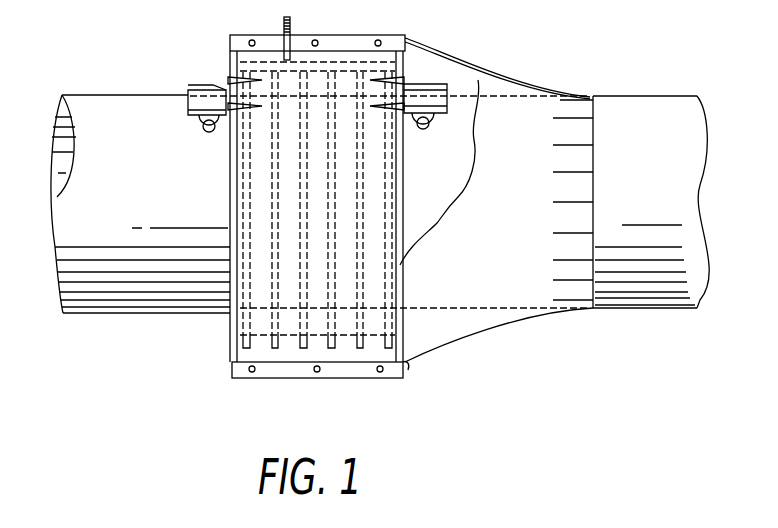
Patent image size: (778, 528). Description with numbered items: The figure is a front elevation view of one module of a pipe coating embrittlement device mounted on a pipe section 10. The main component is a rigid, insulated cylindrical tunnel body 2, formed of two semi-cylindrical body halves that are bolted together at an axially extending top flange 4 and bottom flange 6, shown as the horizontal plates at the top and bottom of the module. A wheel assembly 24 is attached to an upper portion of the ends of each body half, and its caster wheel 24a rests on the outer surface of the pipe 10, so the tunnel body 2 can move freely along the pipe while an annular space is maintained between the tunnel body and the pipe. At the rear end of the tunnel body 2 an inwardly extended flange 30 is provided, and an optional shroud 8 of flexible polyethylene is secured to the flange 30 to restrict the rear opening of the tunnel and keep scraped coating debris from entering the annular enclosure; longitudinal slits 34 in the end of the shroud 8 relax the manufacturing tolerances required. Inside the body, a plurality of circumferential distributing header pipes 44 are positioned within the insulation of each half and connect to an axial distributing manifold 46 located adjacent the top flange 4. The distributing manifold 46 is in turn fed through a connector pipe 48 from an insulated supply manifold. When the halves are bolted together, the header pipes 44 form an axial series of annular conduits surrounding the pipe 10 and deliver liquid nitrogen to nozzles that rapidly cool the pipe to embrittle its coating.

The tunnel body 2 is at (221, 357).
The top flange 4 is at (335, 42).
The bottom flange 6 is at (345, 370).
The shroud 8 is at (514, 118).
The pipe section 10 is at (148, 298).
The wheel assembly 24 is at (204, 89).
The caster wheel 24a is at (214, 133).
The flange 30 is at (405, 362).
The longitudinal slits 34 is at (577, 117).
The circumferential distributing header pipes 44 is at (303, 322).
The distributing manifold 46 is at (372, 65).
The connector pipe 48 is at (280, 32).